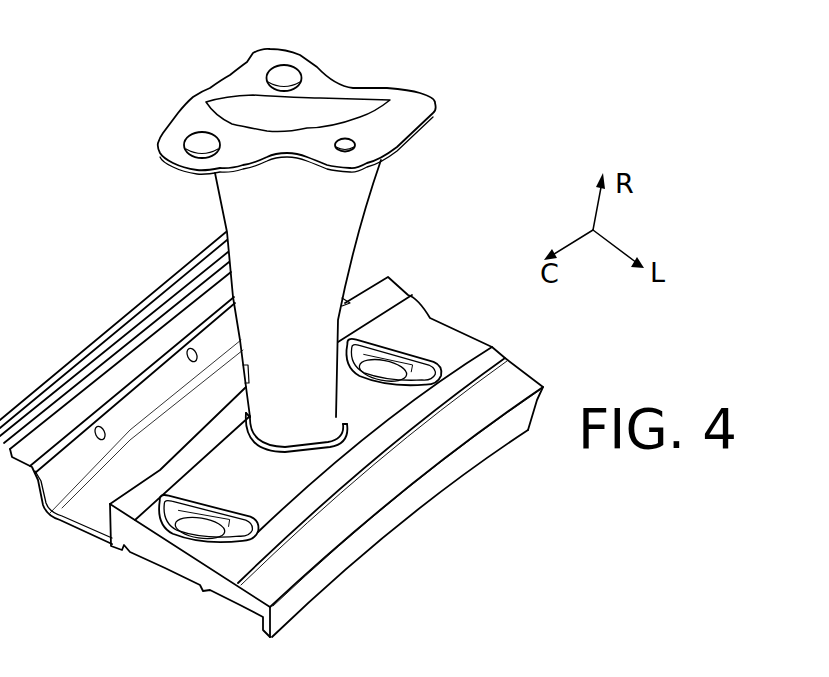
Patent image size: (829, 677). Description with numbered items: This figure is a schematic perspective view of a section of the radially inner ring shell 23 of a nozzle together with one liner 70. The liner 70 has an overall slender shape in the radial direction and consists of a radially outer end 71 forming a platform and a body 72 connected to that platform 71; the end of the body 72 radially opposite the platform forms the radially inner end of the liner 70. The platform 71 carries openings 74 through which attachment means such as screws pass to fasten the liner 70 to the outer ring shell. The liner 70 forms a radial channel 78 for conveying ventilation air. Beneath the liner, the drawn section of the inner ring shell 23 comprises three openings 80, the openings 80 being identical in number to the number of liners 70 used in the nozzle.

The inner ring shell 23 is at (271, 432).
The liner 70 is at (319, 228).
The radially outer end 71 is at (319, 94).
The body 72 is at (340, 236).
The openings 74 is at (277, 71).
The radial channel 78 is at (307, 116).
The openings 80 is at (388, 373).